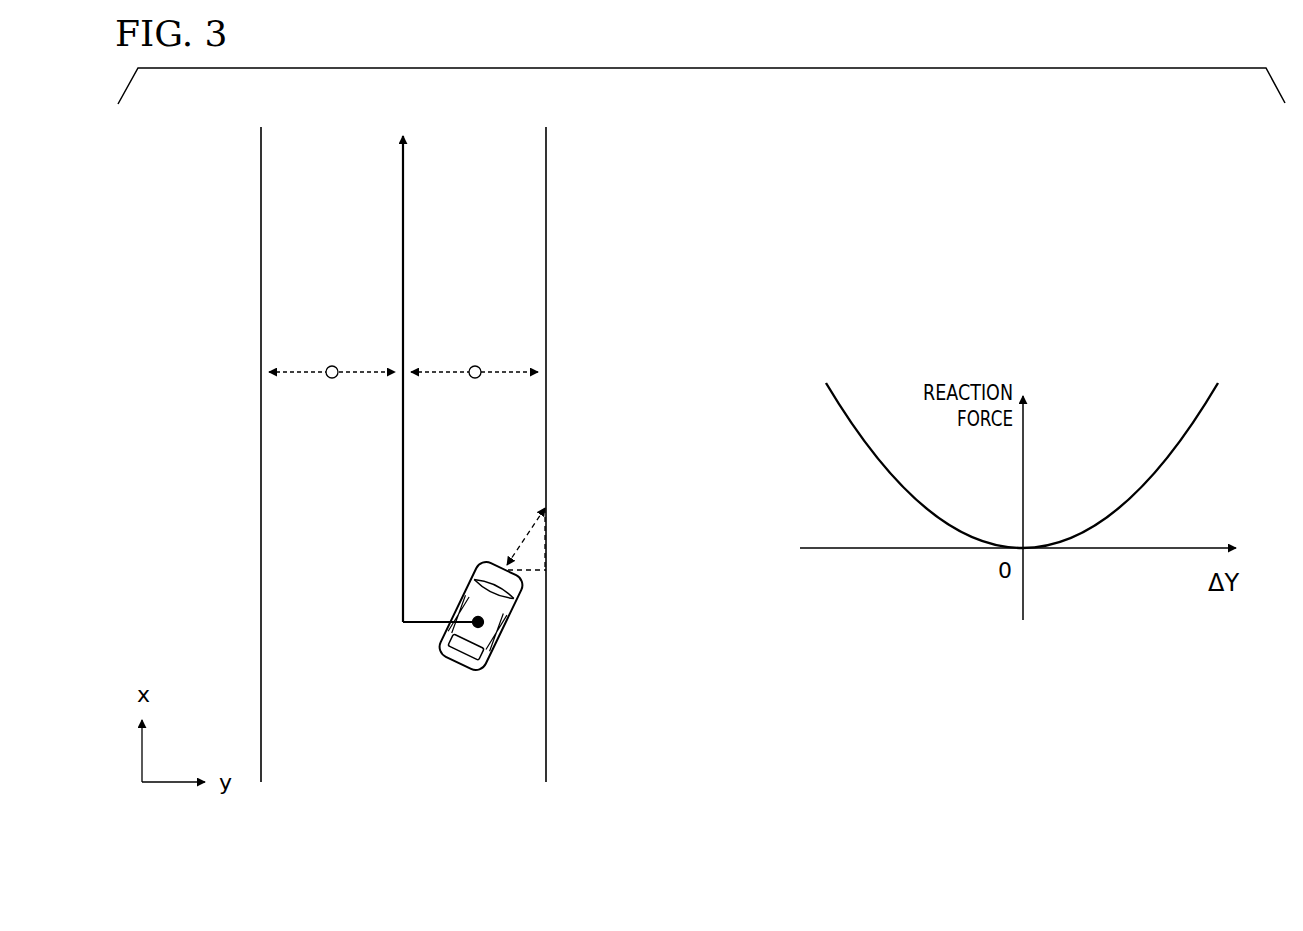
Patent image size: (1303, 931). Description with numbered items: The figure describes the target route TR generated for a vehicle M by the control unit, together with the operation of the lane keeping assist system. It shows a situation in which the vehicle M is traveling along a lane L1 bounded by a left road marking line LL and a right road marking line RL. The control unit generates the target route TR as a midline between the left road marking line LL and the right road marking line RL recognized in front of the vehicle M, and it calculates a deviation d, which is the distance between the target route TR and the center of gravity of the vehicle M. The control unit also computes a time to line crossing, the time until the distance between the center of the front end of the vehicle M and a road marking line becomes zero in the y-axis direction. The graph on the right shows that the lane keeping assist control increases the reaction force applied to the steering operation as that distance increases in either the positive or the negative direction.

The left road marking line LL is at (261, 187).
The right road marking line RL is at (547, 187).
The lane L1 is at (402, 492).
The target route TR is at (404, 187).
The deviation d is at (476, 618).
The vehicle M is at (500, 630).